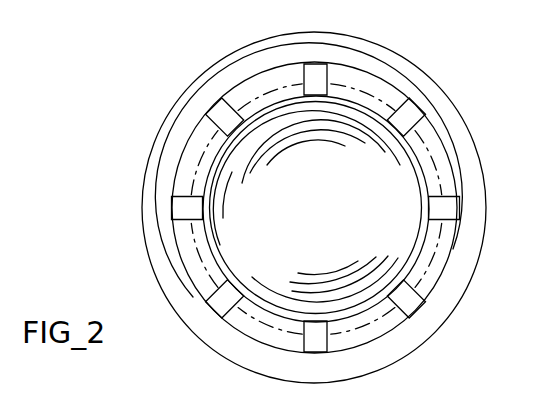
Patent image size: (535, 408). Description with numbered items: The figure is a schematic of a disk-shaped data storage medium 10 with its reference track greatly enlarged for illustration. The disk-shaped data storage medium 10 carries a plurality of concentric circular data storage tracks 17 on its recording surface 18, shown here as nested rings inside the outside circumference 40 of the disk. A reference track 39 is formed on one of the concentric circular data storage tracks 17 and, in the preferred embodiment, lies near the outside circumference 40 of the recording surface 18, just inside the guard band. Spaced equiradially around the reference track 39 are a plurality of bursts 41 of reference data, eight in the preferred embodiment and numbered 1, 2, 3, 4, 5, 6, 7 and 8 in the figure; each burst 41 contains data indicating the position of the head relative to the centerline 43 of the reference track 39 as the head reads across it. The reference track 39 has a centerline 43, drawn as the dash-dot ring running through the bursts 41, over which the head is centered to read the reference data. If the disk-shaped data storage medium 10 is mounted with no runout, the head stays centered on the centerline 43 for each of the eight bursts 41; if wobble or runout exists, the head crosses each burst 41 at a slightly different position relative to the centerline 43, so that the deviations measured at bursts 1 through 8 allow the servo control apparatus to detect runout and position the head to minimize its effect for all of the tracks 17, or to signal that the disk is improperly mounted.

The disk-shaped data storage medium 10 is at (184, 61).
The concentric circular data storage tracks 17 is at (306, 206).
The surface 18 is at (312, 170).
The reference track 39 is at (428, 183).
The outside circumference 40 is at (208, 349).
The bursts 41 is at (279, 183).
The centerline 43 is at (420, 252).
The burst of reference data numbered 1 is at (406, 117).
The burst of reference data numbered 2 is at (444, 208).
The burst of reference data numbered 3 is at (406, 299).
The burst of reference data numbered 4 is at (315, 336).
The burst of reference data numbered 5 is at (225, 299).
The burst of reference data numbered 6 is at (187, 208).
The burst of reference data numbered 7 is at (225, 117).
The burst of reference data numbered 8 is at (315, 79).